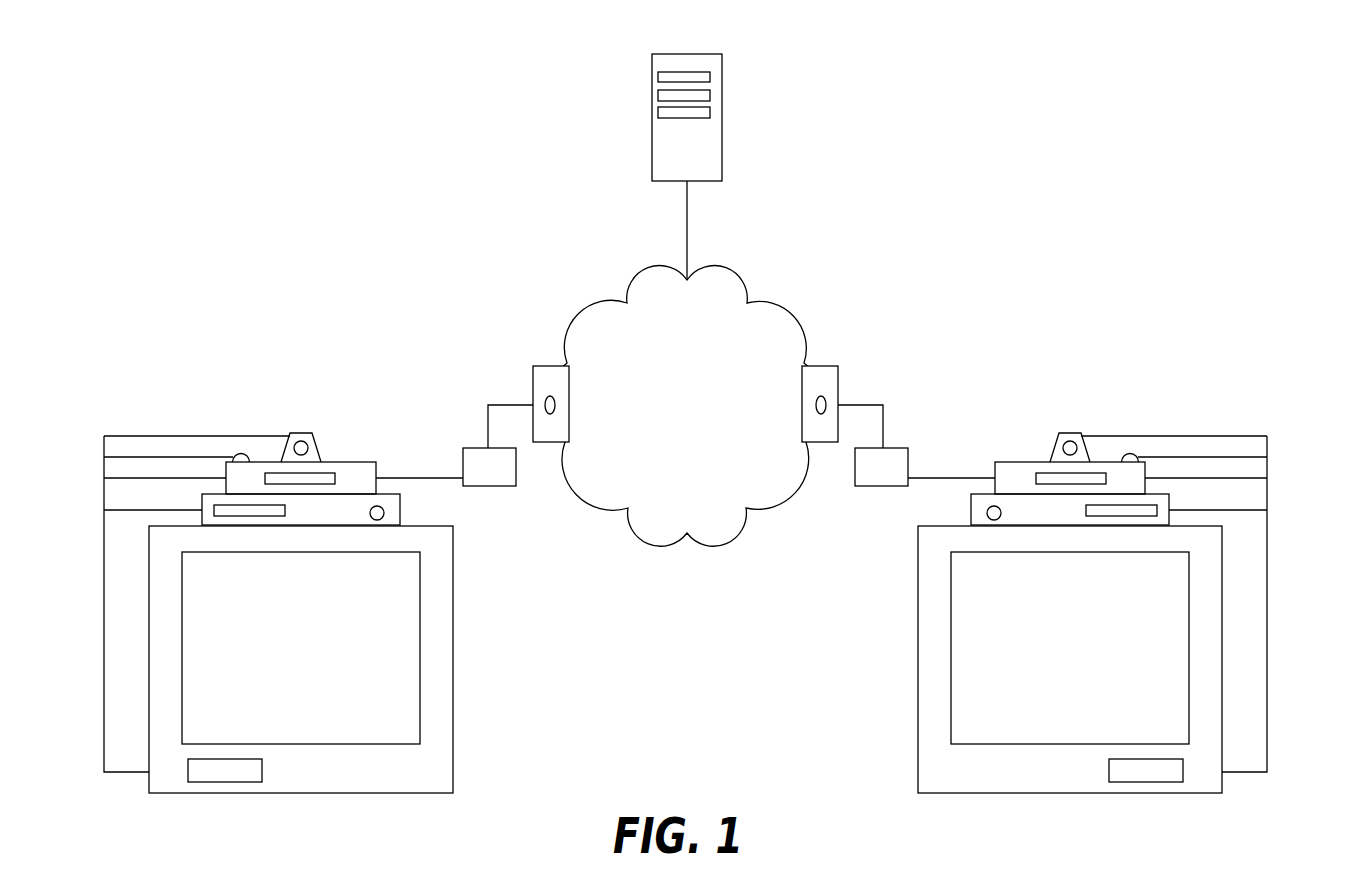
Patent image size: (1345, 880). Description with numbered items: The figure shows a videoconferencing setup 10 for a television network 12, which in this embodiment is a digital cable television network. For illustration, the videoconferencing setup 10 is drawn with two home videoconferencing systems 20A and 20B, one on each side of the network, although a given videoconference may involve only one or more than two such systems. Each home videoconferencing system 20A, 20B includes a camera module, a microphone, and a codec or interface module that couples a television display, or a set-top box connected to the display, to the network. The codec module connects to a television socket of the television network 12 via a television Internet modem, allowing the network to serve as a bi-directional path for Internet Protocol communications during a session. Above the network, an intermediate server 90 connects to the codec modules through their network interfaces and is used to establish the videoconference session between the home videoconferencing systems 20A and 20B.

The videoconferencing setup 10 is at (347, 161).
The television network 12 is at (594, 300).
The home videoconferencing system 20A is at (140, 402).
The home videoconferencing system 20B is at (1278, 423).
The intermediate server 90 is at (663, 54).